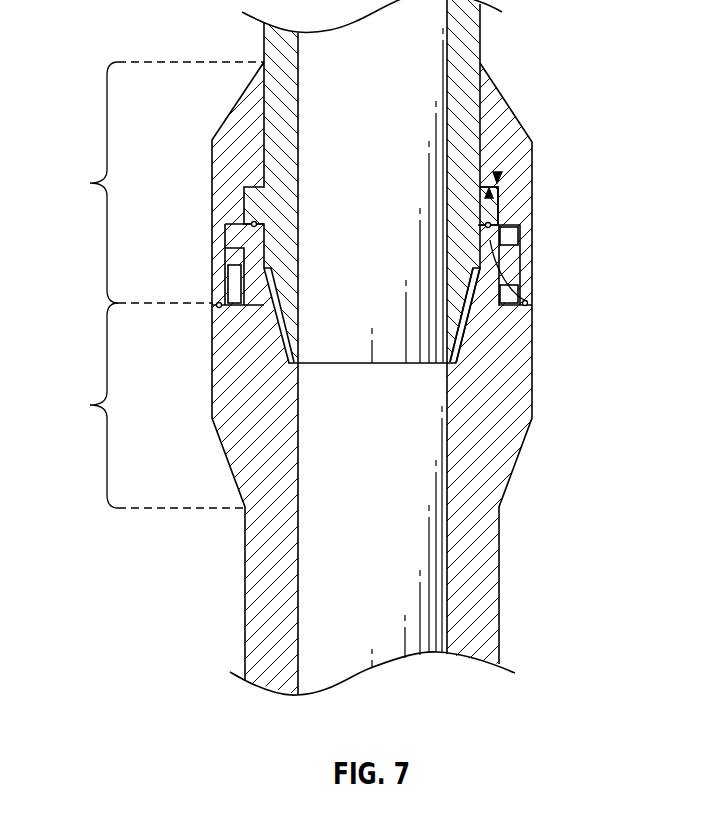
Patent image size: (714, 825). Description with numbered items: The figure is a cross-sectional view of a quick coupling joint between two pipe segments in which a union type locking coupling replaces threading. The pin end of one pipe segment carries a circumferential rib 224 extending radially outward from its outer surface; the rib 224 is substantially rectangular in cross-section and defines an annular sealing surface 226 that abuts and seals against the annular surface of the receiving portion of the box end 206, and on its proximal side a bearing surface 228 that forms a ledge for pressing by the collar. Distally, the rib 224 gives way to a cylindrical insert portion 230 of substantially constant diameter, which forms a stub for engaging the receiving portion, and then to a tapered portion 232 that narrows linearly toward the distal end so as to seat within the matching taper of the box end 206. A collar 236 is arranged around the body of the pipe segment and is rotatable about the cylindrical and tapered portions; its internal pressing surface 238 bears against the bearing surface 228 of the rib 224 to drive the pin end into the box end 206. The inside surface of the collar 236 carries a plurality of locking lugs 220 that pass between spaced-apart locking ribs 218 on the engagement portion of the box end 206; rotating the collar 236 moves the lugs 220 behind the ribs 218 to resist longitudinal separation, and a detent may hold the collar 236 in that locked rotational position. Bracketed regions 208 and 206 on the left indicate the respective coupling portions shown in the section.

The box end 206 is at (143, 405).
The upper housing portion 208 is at (153, 182).
The locking ribs 218 is at (520, 257).
The locking lugs 220 is at (222, 258).
The rib 224 is at (485, 215).
The sealing surface 226 is at (490, 225).
The bearing surface 228 is at (508, 163).
The cylindrical insert portion 230 is at (527, 304).
The tapered seat 232 is at (460, 325).
The collar 236 is at (503, 100).
The pressing surface 238 is at (485, 215).